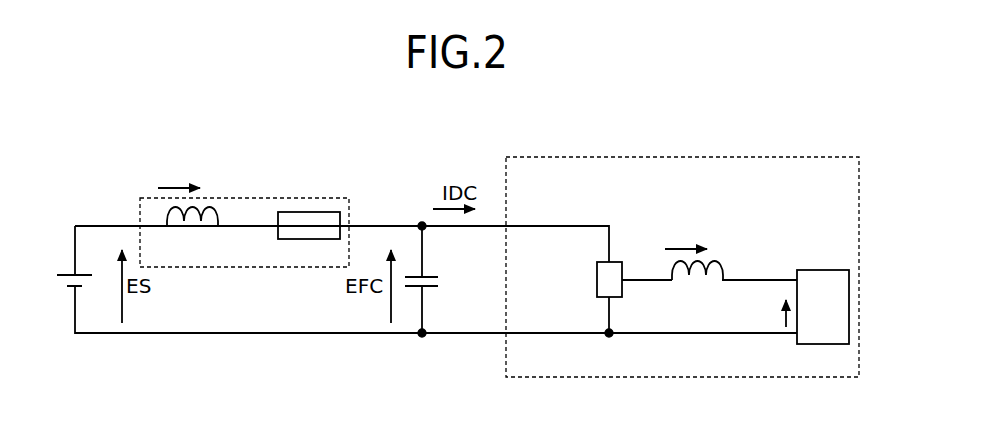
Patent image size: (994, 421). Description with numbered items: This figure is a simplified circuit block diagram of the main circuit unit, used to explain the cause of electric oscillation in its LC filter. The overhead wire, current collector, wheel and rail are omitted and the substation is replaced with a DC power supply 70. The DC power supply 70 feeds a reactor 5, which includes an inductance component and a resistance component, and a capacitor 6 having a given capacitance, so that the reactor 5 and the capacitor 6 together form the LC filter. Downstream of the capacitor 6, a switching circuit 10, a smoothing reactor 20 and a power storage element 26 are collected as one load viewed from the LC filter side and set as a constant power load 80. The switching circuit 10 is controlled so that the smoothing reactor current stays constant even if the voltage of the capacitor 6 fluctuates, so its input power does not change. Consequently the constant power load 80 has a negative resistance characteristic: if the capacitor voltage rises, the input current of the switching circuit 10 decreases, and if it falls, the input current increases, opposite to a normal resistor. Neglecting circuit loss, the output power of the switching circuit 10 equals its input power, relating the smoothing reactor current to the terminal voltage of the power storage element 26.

The DC power supply 70 is at (65, 272).
The reactor 5 is at (285, 198).
The capacitor 6 is at (428, 288).
The switching circuit 10 is at (614, 262).
The smoothing reactor 20 is at (698, 283).
The power storage element 26 is at (817, 270).
The constant power load 80 is at (724, 157).